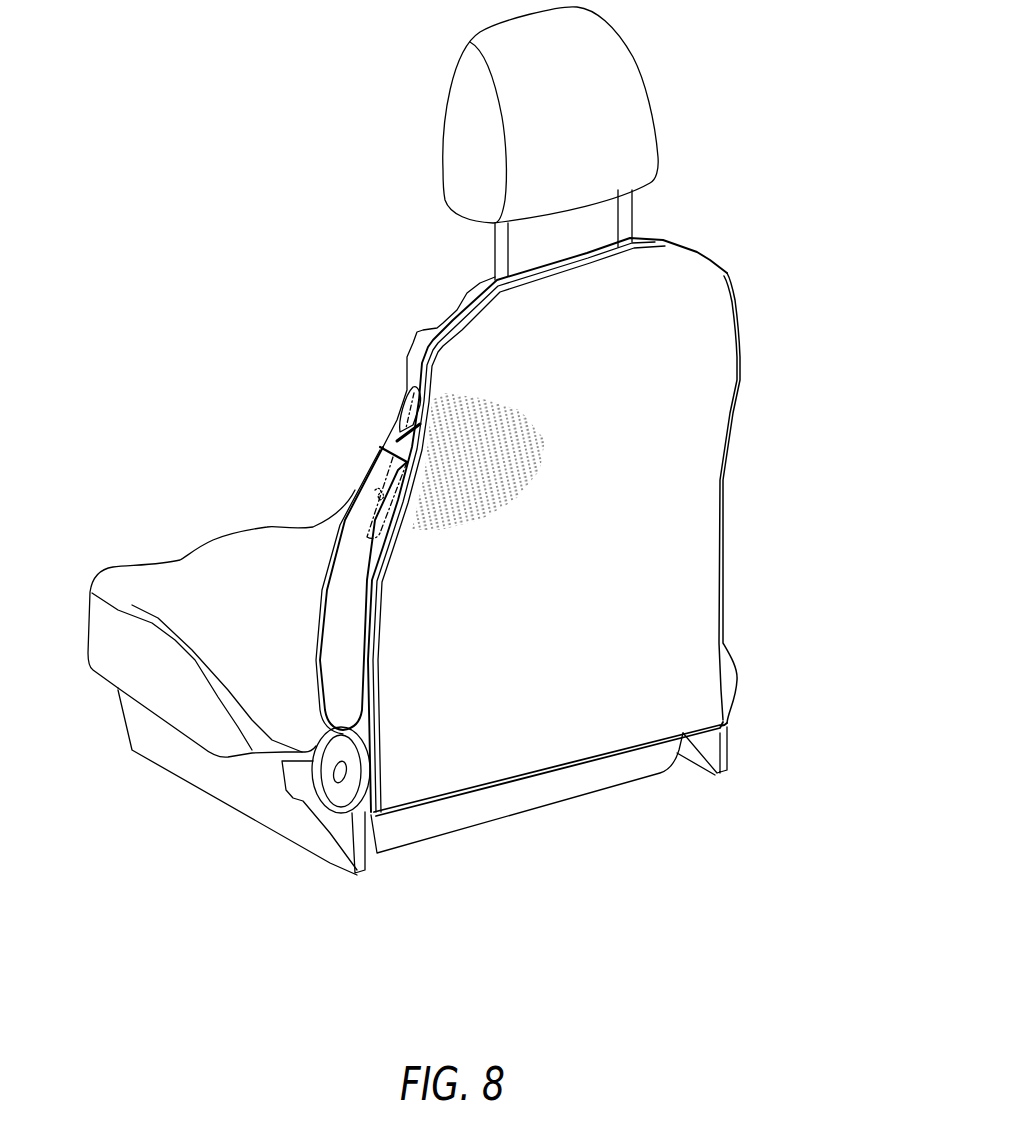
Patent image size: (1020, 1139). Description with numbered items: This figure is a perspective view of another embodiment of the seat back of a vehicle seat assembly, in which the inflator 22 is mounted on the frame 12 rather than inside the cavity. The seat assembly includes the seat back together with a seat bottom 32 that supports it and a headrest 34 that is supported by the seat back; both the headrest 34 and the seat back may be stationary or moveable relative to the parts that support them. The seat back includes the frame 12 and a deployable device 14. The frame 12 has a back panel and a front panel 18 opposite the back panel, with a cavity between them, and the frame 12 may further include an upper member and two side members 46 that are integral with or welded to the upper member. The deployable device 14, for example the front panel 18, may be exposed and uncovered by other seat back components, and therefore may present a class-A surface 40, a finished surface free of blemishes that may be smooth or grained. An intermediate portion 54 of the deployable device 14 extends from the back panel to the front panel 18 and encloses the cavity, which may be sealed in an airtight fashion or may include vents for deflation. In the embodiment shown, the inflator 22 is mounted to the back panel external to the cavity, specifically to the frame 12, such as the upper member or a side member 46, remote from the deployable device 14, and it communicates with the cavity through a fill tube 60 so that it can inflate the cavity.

The headrest 34 is at (600, 70).
The front panel 18 is at (717, 328).
The deployable device 14 is at (693, 412).
The class-A surface 40 is at (603, 503).
The frame 12 is at (415, 358).
The side member 46 is at (347, 595).
The inflator 22 is at (367, 495).
The fill tube 60 is at (402, 430).
The seat bottom 32 is at (173, 580).
The intermediate portion 54 is at (380, 743).